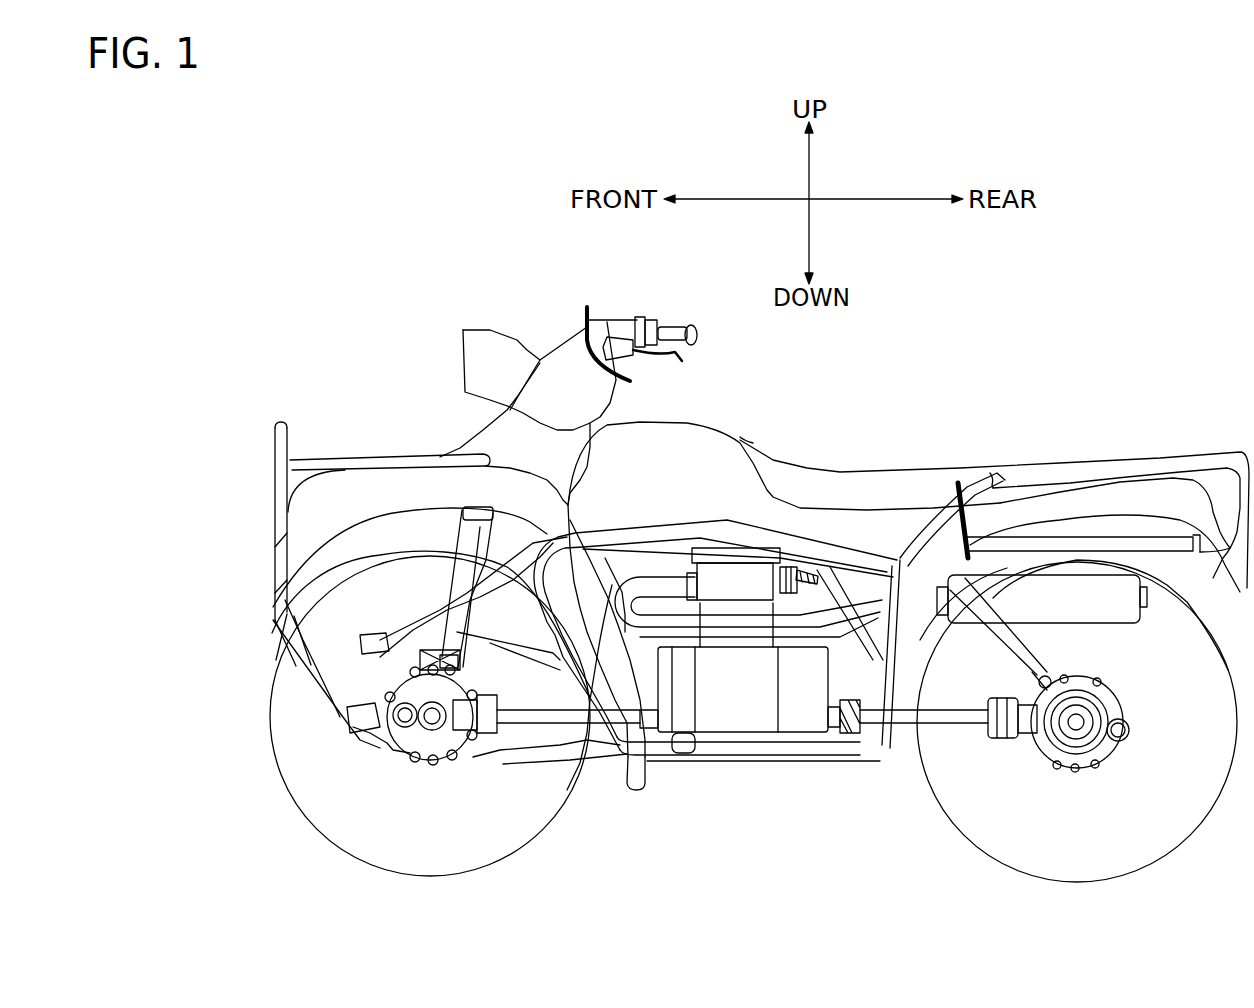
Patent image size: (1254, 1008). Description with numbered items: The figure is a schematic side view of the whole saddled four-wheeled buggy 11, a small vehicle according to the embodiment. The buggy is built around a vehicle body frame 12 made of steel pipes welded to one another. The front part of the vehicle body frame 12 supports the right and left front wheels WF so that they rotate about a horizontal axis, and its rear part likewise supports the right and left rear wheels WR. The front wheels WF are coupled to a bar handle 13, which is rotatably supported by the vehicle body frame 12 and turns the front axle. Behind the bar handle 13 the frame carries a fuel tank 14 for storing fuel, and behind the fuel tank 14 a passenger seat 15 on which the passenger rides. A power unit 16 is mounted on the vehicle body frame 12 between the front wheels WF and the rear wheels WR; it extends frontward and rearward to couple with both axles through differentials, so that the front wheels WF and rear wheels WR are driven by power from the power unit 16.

The saddled four-wheeled buggy 11 is at (980, 371).
The vehicle body frame 12 is at (553, 521).
The bar handle 13 is at (607, 320).
The fuel tank 14 is at (690, 434).
The passenger seat 15 is at (933, 471).
The power unit 16 is at (732, 715).
The front wheels WF is at (520, 828).
The rear wheels WR is at (967, 813).